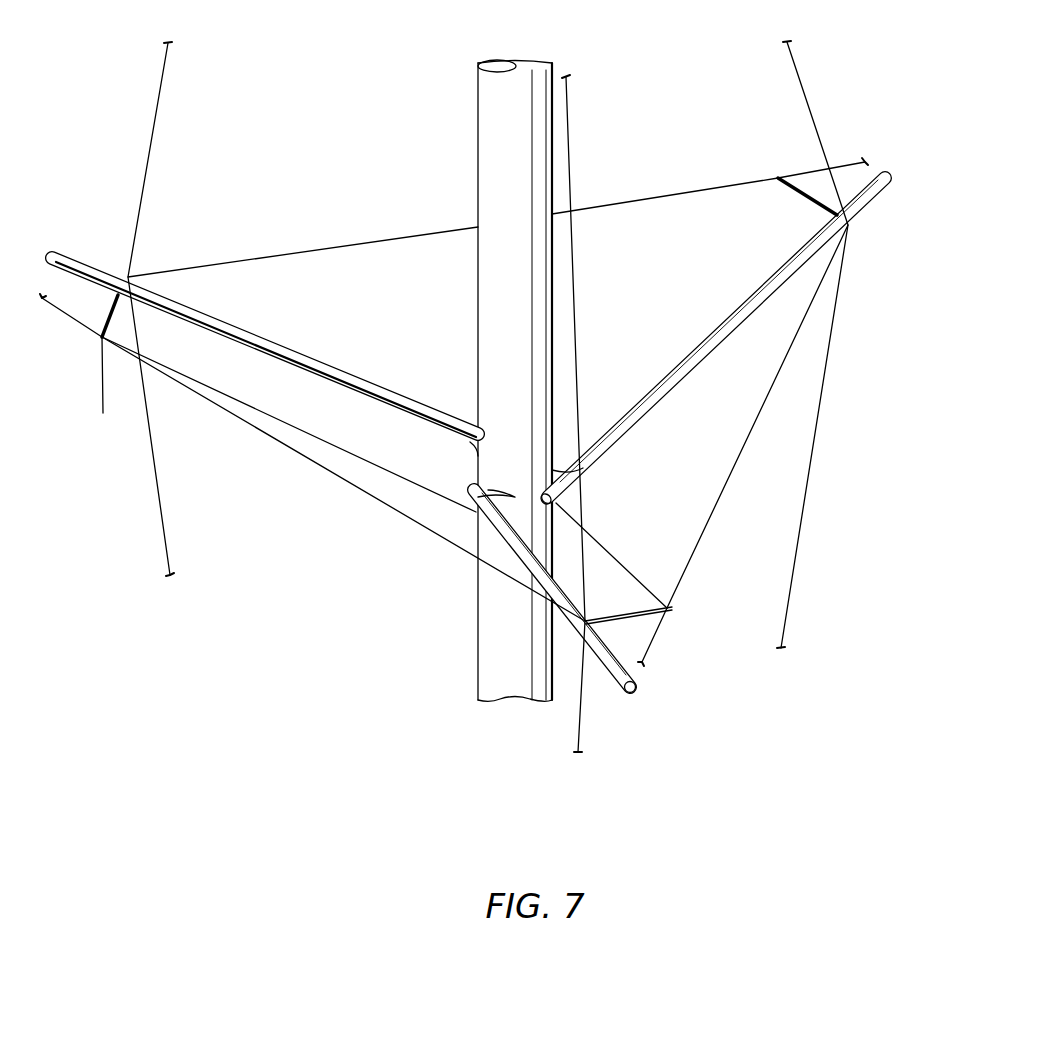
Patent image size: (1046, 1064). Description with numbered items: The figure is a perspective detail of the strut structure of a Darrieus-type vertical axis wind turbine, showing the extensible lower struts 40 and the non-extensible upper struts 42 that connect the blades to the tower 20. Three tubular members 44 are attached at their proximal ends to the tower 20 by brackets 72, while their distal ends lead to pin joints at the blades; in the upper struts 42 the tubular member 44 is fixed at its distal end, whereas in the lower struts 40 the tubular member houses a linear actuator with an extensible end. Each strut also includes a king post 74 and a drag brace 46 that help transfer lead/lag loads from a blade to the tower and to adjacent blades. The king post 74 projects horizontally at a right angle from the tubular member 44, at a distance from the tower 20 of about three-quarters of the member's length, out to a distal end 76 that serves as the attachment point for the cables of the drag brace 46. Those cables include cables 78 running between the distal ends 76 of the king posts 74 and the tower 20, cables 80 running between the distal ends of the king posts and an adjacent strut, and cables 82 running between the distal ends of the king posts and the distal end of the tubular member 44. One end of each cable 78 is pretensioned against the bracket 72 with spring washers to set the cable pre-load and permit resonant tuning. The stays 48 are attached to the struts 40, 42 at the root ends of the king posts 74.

The tower 20 is at (477, 138).
The extensible lower strut 40 is at (350, 518).
The non-extensible upper strut 42 is at (466, 408).
The tubular member 44 is at (318, 358).
The drag brace 46 is at (338, 226).
The stay 48 is at (155, 133).
The bracket 72 is at (470, 446).
The king post 74 is at (112, 305).
The distal end of king post 76 is at (103, 413).
The cable 78 is at (333, 442).
The cable 80 is at (322, 477).
The cable 82 is at (95, 345).